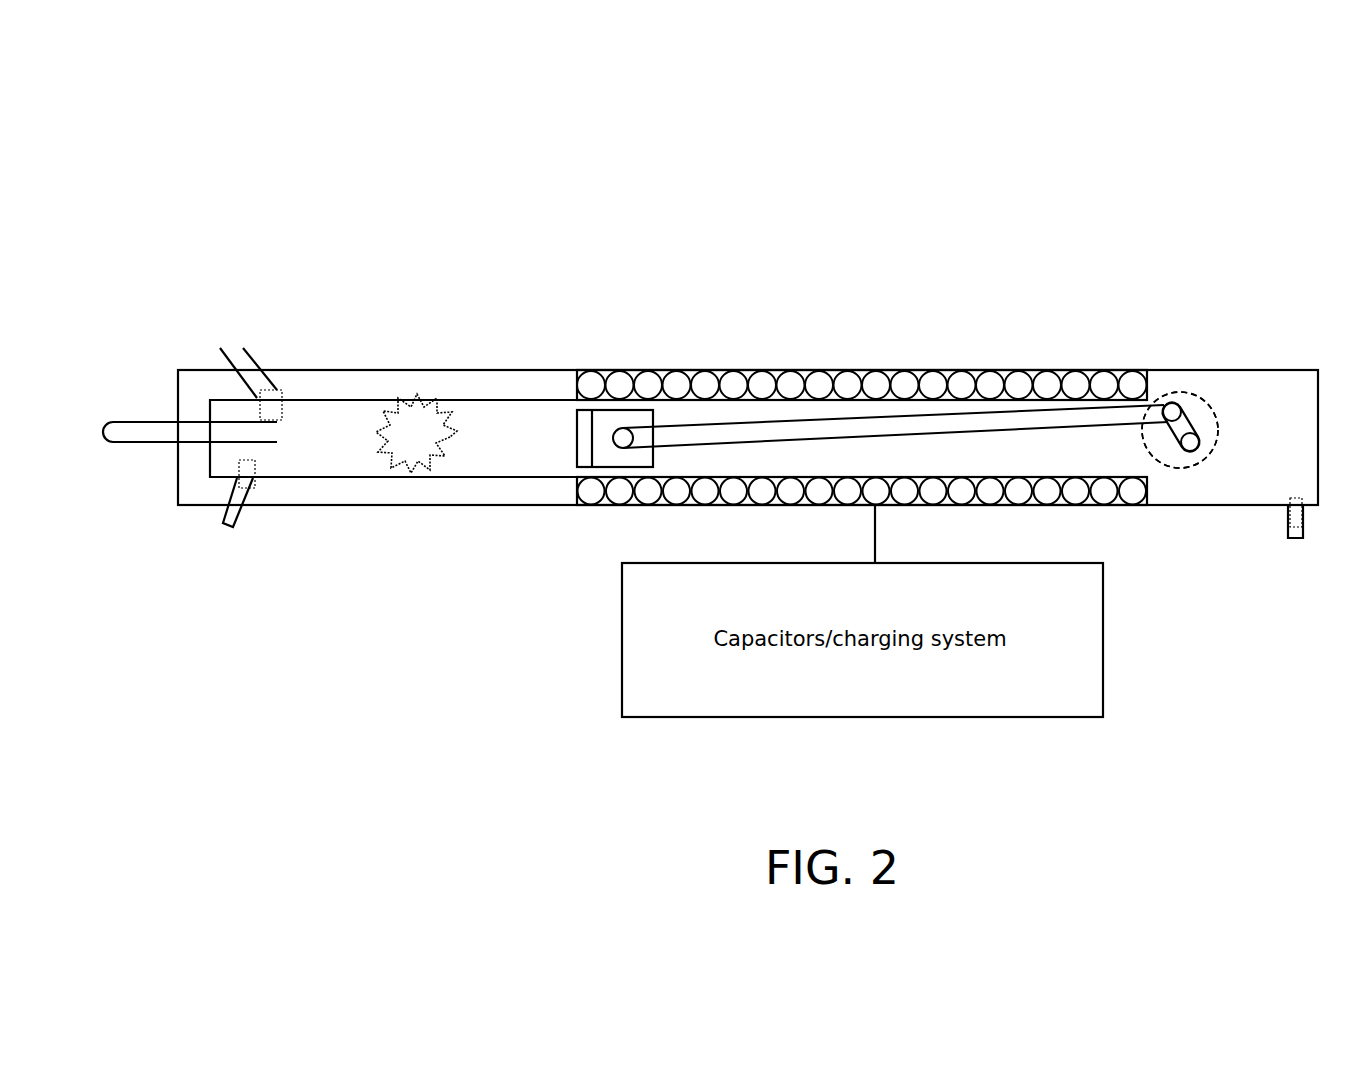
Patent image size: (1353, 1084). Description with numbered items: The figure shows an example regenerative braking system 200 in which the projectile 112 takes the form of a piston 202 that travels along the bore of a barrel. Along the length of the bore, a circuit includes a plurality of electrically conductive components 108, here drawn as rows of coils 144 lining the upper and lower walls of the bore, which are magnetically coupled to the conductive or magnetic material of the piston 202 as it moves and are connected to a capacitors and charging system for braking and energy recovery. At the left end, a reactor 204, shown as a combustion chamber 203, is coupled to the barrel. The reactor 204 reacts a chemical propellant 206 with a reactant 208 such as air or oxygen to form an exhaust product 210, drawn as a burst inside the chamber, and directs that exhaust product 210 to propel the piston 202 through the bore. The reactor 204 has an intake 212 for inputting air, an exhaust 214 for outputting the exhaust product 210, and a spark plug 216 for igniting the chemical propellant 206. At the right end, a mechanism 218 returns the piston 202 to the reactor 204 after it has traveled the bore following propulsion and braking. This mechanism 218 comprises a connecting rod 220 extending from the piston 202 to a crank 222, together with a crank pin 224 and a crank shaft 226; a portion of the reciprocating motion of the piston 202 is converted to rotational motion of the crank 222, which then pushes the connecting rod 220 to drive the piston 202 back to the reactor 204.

The regenerative braking system 200 is at (241, 197).
The electrically conductive components 108 is at (862, 392).
The coils 144 is at (793, 368).
The projectile 112 is at (872, 388).
The piston 202 is at (609, 415).
The combustion chamber 203 is at (393, 522).
The reactor 204 is at (470, 477).
The chemical propellant 206 is at (393, 388).
The reactant 208 is at (330, 415).
The exhaust product 210 is at (430, 407).
The intake 212 is at (229, 345).
The exhaust 214 is at (230, 530).
The spark plug 216 is at (118, 445).
The mechanism 218 is at (1157, 340).
The connecting rod 220 is at (1152, 407).
The crank 222 is at (1202, 397).
The crank pin 224 is at (1203, 442).
The crank shaft 226 is at (1192, 423).